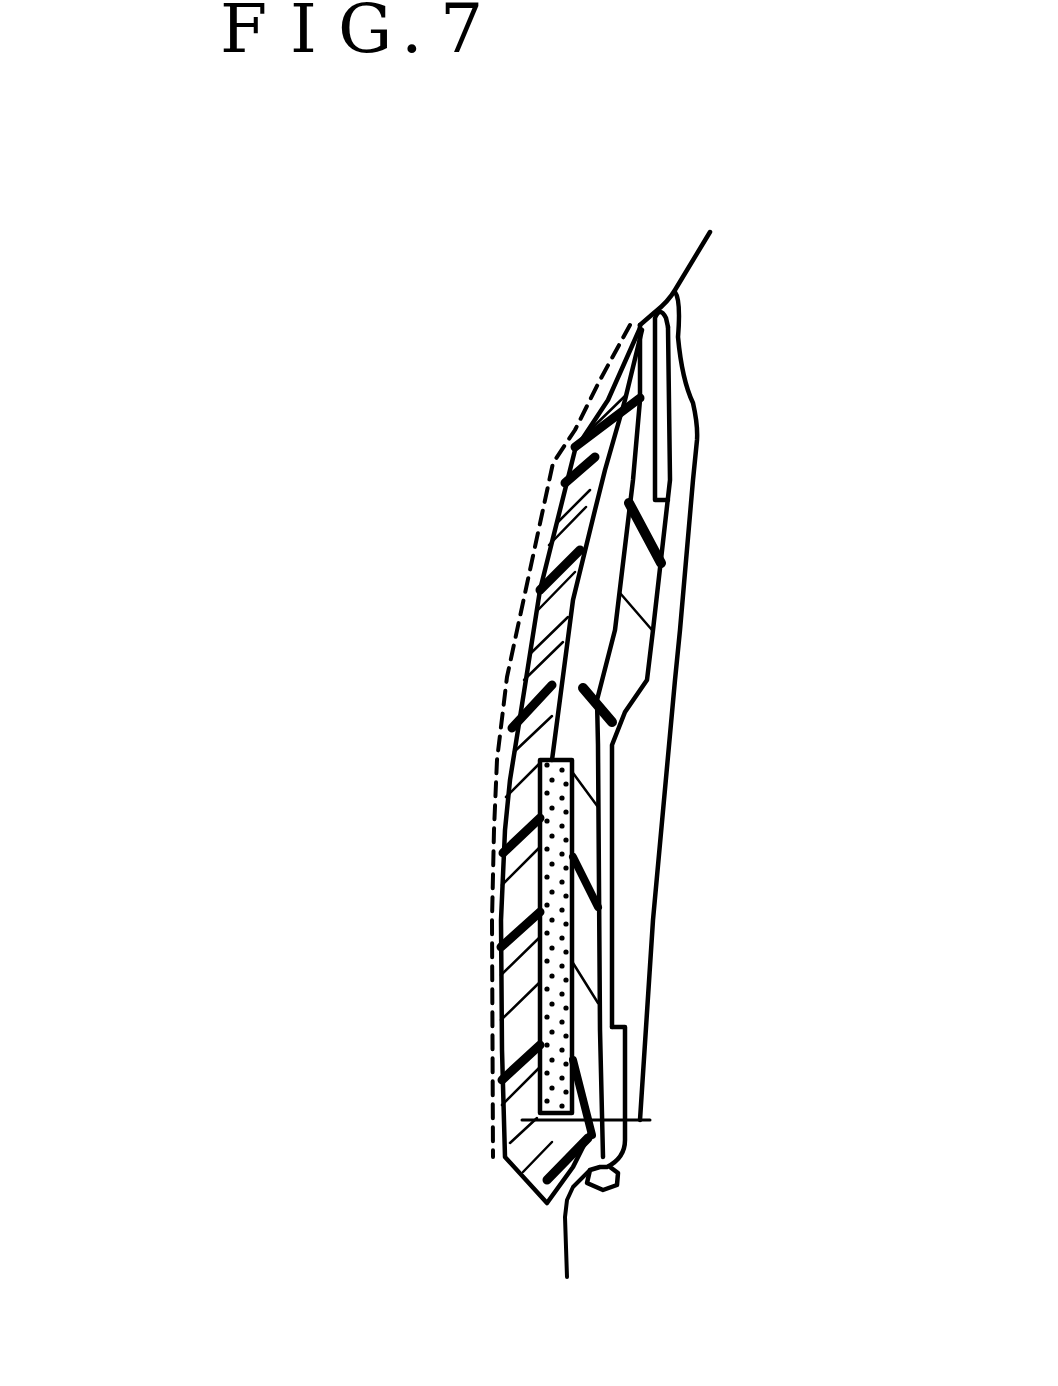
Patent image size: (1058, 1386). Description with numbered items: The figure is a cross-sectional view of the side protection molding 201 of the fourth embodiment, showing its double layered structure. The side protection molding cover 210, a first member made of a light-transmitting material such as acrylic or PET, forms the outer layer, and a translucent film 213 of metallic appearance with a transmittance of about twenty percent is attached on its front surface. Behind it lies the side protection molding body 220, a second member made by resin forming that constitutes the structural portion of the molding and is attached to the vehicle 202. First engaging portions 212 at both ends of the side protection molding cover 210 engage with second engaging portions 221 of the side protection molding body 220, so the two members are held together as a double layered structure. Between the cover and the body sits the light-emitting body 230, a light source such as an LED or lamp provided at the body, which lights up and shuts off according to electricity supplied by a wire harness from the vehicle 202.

The side protection molding 201 is at (456, 997).
The vehicle 202 is at (640, 1172).
The side protection molding cover 210 is at (552, 613).
The first engaging portions 212 is at (620, 397).
The translucent film 213 is at (503, 670).
The side protection molding body 220 is at (600, 722).
The second engaging portions 221 is at (667, 403).
The light-emitting body 230 is at (548, 915).